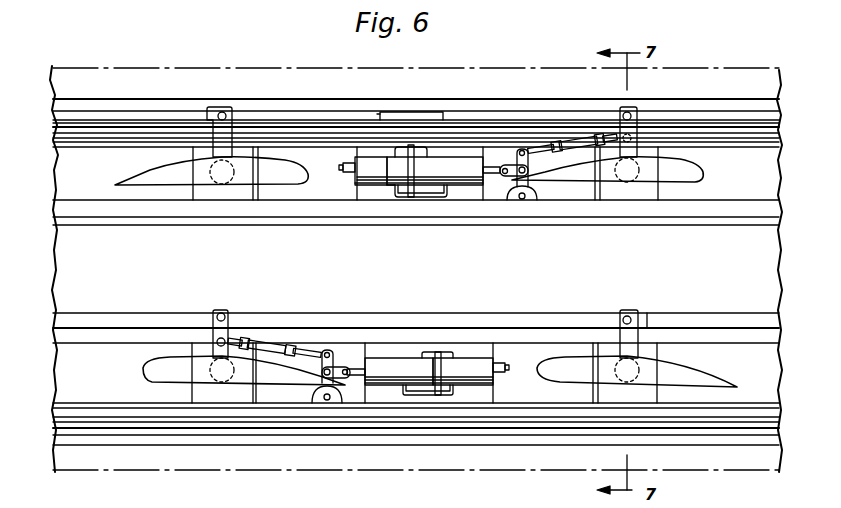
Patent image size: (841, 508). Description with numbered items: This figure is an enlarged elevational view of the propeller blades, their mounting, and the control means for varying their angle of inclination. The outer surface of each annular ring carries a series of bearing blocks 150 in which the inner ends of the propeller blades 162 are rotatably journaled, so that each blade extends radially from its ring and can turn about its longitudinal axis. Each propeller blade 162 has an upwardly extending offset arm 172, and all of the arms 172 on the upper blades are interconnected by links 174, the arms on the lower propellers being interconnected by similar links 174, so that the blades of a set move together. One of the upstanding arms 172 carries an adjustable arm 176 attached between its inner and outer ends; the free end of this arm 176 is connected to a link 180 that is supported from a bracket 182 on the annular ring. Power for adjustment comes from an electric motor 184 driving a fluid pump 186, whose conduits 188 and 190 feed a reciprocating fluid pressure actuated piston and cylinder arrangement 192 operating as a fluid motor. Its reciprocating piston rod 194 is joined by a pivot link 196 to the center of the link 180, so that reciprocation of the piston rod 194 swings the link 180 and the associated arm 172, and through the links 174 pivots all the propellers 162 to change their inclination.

The bearing block 150 is at (223, 192).
The propeller blade 162 is at (687, 378).
The upwardly extending offset arm 172 is at (632, 107).
The link 174 is at (480, 118).
The adjustable arm 176 is at (547, 153).
The link 180 is at (517, 188).
The bracket 182 is at (527, 200).
The electric motor 184 is at (370, 175).
The fluid pump 186 is at (392, 187).
The conduit 188 is at (402, 150).
The conduit 190 is at (427, 197).
The piston and cylinder arrangement 192 is at (447, 161).
The piston rod 194 is at (493, 163).
The pivot link 196 is at (507, 175).